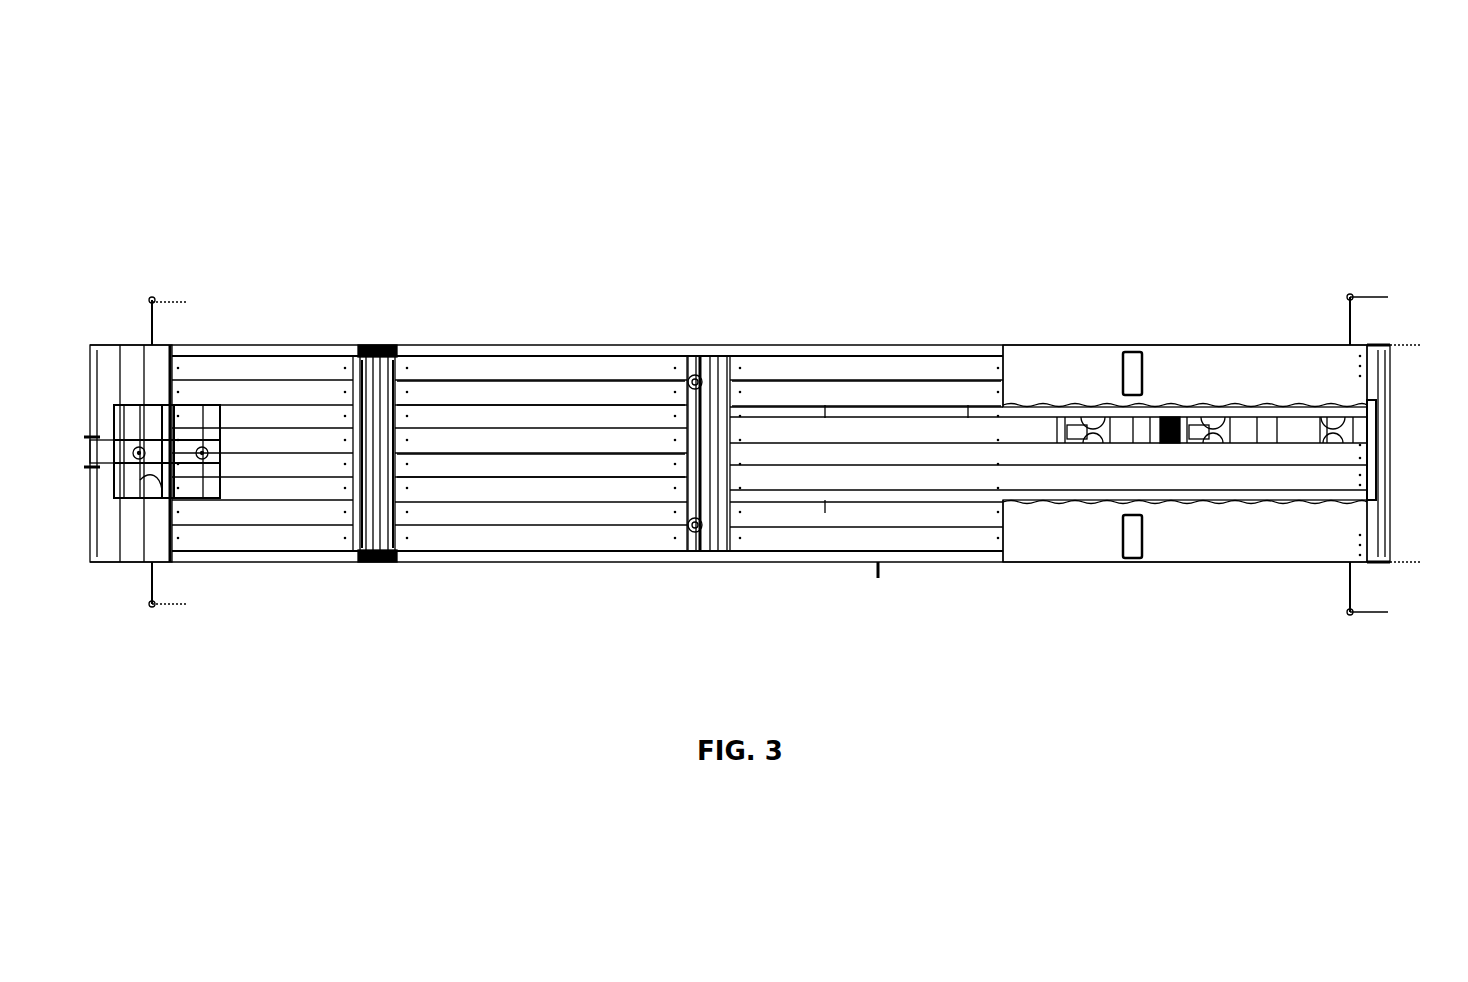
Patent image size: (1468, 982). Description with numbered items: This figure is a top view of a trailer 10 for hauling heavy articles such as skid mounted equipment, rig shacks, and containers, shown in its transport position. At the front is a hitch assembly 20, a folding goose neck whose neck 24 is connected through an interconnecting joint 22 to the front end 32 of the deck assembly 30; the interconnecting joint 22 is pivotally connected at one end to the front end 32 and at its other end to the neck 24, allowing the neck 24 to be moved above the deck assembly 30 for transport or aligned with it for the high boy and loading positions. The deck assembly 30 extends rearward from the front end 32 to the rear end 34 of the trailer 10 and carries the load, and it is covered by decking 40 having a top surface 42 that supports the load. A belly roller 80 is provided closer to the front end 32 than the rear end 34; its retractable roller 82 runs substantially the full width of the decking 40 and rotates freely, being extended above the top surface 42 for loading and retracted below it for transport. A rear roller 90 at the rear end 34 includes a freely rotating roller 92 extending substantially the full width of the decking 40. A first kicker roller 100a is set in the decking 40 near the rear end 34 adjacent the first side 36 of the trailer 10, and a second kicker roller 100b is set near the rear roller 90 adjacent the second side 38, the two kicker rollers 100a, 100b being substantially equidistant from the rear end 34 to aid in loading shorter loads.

The trailer 10 is at (898, 180).
The hitch assembly 20 is at (270, 548).
The interconnecting joint 22 is at (388, 562).
The neck 24 is at (215, 548).
The deck assembly 30 is at (573, 540).
The front end 32 is at (403, 380).
The rear end 34 is at (1372, 345).
The first side 36 is at (975, 562).
The second side 38 is at (975, 345).
The decking 40 is at (572, 415).
The top surface 42 is at (632, 472).
The belly roller 80 is at (722, 367).
The retractable roller 82 is at (722, 500).
The rear roller 90 is at (1387, 567).
The roller 92 is at (1385, 525).
The first kicker roller 100a is at (1113, 562).
The second kicker roller 100b is at (1133, 368).